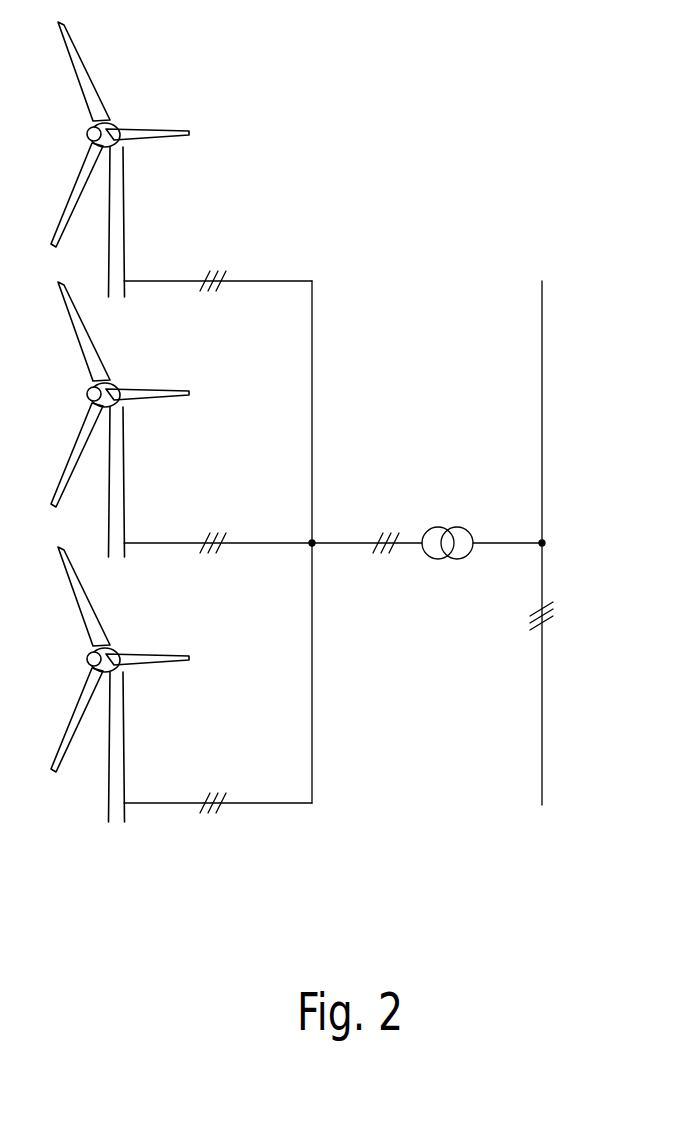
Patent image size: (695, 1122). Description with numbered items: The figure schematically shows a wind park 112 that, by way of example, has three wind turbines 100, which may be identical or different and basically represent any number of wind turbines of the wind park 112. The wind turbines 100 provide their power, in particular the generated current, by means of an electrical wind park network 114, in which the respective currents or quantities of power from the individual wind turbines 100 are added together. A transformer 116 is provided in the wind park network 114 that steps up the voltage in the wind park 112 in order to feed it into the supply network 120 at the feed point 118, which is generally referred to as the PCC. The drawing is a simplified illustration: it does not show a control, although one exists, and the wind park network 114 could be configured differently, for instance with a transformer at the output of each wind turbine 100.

The wind turbine 100 is at (125, 207).
The wind park 112 is at (412, 148).
The electrical wind park network 114 is at (337, 543).
The transformer 116 is at (455, 510).
The feed point 118 is at (556, 507).
The supply network 120 is at (542, 320).